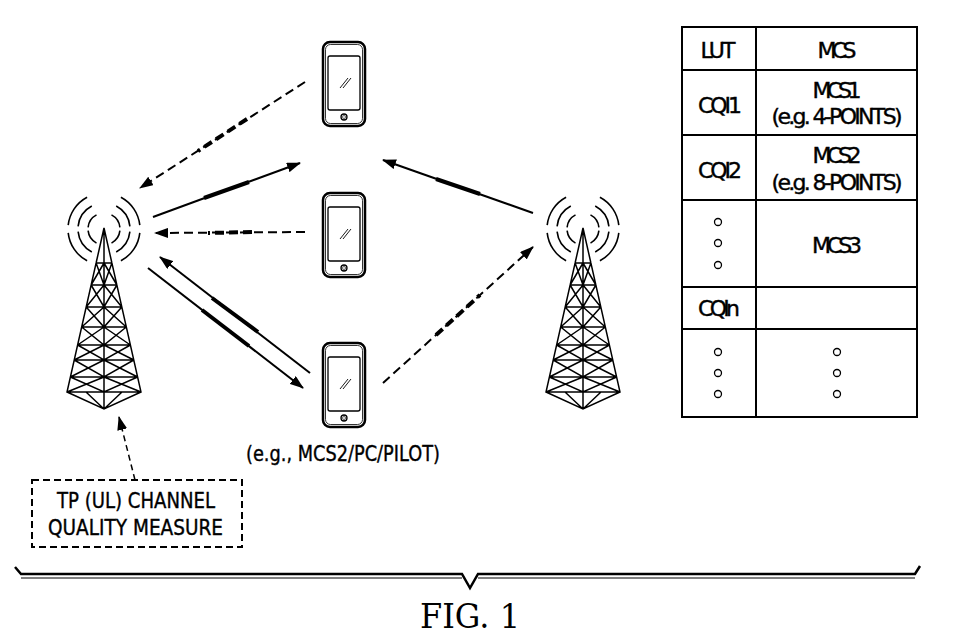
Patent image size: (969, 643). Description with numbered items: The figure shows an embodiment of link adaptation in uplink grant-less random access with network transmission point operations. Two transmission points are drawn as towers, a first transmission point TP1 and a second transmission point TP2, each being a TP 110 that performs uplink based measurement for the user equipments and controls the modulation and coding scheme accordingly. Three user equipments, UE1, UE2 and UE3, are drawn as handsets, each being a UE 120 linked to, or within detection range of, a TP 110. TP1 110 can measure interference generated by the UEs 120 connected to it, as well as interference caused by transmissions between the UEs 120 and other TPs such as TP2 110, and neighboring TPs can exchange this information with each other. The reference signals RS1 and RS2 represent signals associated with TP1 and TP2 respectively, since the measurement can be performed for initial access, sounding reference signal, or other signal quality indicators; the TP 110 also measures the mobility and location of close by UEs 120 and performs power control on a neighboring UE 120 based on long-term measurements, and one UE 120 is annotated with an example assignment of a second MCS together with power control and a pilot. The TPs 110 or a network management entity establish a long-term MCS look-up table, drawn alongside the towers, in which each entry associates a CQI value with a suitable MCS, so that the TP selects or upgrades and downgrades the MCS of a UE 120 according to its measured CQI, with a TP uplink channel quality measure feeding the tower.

The transmission point (TP) 110 is at (343, 283).
The user equipment (UE) 120 is at (378, 217).
The first transmission point TP1 is at (583, 283).
The second transmission point TP2 is at (104, 283).
The first user equipment UE1 is at (344, 67).
The second user equipment UE2 is at (344, 219).
The third user equipment UE3 is at (344, 369).
The first reference signal RS1 is at (458, 183).
The second reference signal RS2 is at (226, 177).